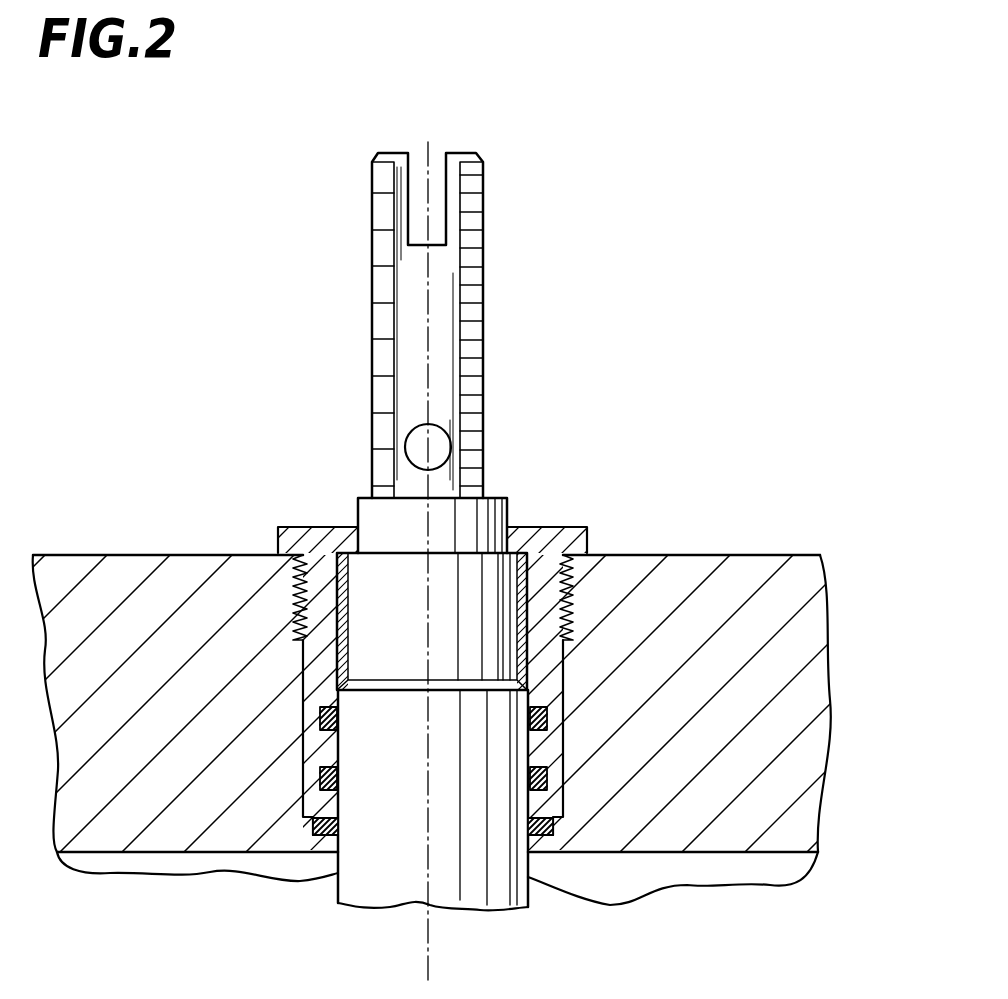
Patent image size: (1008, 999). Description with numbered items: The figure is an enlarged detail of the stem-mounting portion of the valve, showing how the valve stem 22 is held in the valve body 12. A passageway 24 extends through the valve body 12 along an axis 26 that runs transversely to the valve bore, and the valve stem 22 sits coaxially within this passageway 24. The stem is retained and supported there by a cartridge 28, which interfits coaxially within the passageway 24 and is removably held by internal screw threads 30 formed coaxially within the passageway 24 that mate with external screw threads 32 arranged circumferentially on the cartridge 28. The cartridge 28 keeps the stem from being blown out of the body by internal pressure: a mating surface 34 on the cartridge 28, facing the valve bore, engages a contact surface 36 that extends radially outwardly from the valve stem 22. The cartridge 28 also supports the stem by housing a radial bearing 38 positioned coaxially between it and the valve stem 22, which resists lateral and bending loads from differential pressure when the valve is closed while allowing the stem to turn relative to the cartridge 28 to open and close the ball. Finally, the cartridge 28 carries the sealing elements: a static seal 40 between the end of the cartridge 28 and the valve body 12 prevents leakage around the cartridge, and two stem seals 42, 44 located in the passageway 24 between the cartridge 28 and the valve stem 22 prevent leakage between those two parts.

The valve body 12 is at (672, 555).
The valve stem 22 is at (470, 880).
The passageway 24 is at (563, 795).
The axis 26 is at (428, 378).
The cartridge 28 is at (548, 531).
The internal screw threads 30 is at (297, 570).
The external screw threads 32 is at (292, 613).
The mating surface 34 is at (342, 553).
The contact surface 36 is at (350, 560).
The radial bearing 38 is at (517, 553).
The static seal 40 is at (315, 837).
The stem seal 42 is at (313, 787).
The stem seal 44 is at (318, 712).